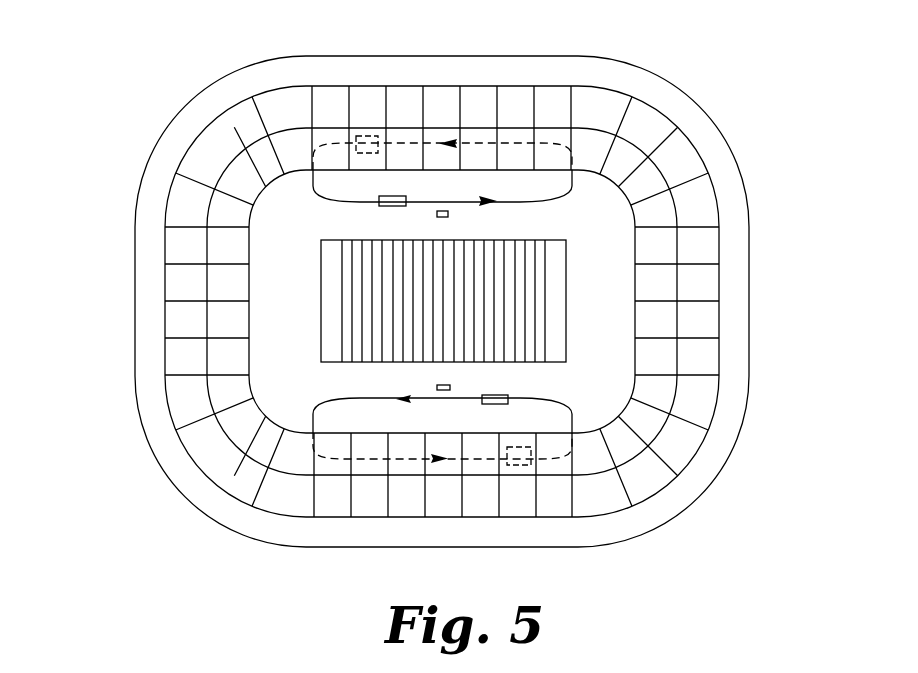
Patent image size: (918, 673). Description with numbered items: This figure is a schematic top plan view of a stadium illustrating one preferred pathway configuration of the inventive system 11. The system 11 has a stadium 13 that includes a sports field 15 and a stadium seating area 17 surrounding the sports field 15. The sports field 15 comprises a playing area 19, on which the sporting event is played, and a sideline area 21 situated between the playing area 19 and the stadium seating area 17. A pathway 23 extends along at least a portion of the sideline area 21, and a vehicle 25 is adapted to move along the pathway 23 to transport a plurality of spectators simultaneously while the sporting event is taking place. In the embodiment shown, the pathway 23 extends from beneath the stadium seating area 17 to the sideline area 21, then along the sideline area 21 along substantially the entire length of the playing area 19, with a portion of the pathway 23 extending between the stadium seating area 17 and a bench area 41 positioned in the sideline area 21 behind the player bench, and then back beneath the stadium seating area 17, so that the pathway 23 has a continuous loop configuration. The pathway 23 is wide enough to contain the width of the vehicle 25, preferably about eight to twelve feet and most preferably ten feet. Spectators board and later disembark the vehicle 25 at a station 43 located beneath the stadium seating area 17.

The system 11 is at (714, 95).
The stadium 13 is at (144, 114).
The sports field 15 is at (302, 311).
The stadium seating area 17 is at (183, 352).
The playing area 19 is at (530, 300).
The sideline area 21 is at (470, 210).
The pathway 23 is at (556, 203).
The vehicle 25 is at (390, 206).
The bench area 41 is at (437, 215).
The station 43 is at (378, 140).